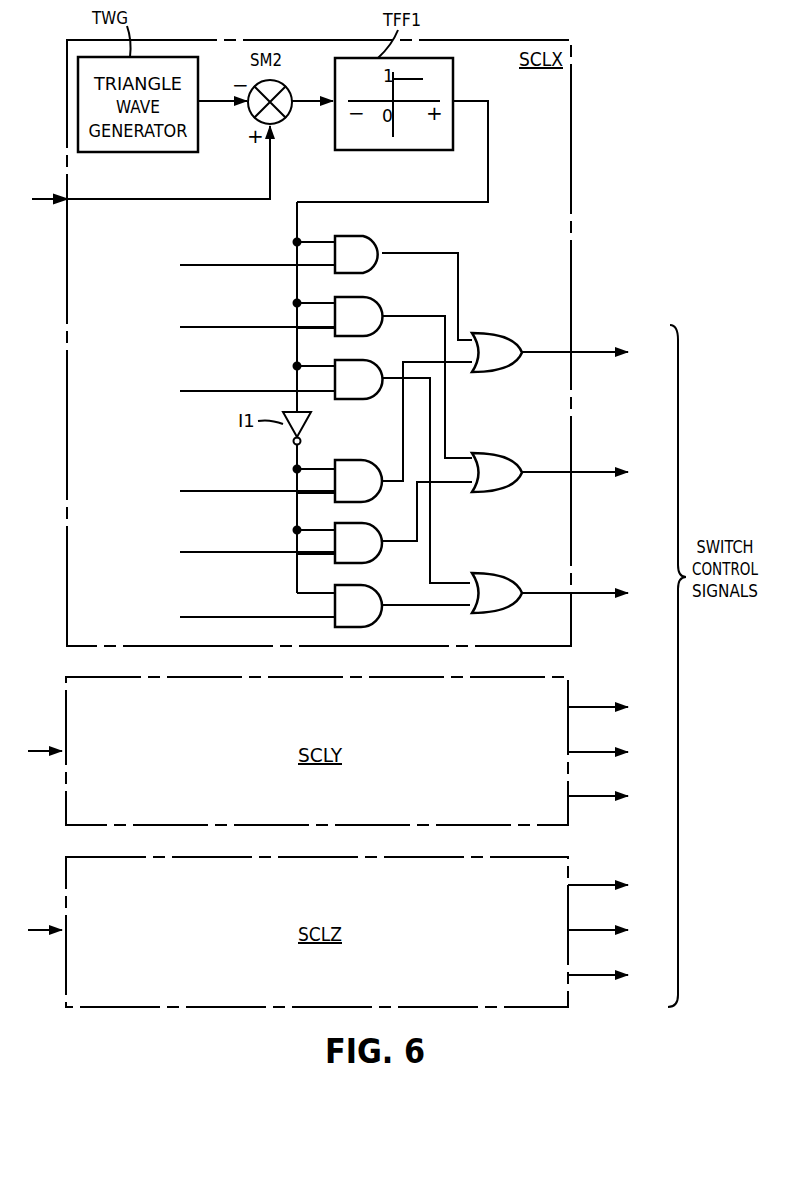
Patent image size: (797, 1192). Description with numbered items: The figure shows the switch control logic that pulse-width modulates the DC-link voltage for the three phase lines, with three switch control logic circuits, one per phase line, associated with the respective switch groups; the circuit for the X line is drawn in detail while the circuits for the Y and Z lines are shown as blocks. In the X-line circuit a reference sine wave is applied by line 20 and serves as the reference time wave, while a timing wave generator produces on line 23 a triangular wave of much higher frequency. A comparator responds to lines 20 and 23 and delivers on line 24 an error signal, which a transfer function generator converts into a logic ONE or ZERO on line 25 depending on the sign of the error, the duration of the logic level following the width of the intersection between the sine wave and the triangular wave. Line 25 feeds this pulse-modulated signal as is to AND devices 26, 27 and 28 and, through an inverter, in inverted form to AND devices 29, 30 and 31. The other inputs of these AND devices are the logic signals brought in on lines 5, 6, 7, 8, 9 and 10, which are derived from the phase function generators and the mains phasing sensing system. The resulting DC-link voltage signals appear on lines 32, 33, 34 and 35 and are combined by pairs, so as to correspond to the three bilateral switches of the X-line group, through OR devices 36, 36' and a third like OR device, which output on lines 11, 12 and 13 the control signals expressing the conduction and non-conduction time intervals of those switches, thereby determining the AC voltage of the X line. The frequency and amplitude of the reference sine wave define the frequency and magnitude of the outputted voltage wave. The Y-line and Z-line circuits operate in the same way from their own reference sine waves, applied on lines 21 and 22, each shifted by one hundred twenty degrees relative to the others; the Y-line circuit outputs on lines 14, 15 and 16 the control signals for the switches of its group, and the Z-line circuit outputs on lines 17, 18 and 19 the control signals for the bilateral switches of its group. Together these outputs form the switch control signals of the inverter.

The comparator signal line 1+ 5 is at (236, 262).
The comparator signal line 2+ 6 is at (236, 324).
The comparator signal line 3+ 7 is at (236, 388).
The comparator signal line 1- 8 is at (236, 488).
The comparator signal line 2- 9 is at (236, 549).
The comparator signal line 3- 10 is at (240, 614).
The output line 11 is at (540, 352).
The output line 12 is at (540, 472).
The output line 13 is at (540, 593).
The output line 14 is at (596, 710).
The output line 15 is at (596, 755).
The output line 16 is at (596, 798).
The output line 17 is at (594, 883).
The output line 18 is at (596, 933).
The output line 19 is at (578, 979).
The reference sine wave line 20 is at (40, 203).
The reference voltage input v*y 21 is at (32, 754).
The reference voltage input v*z 22 is at (30, 933).
The triangular wave line 23 is at (214, 98).
The error signal line 24 is at (310, 101).
The logic signal line 25 is at (476, 101).
The AND device 26 is at (360, 236).
The AND device 27 is at (360, 297).
The AND device 28 is at (360, 360).
The AND device 29 is at (360, 460).
The AND device 30 is at (360, 523).
The AND device 31 is at (360, 585).
The DC-link voltage line 32 is at (422, 253).
The DC-link voltage line 33 is at (410, 317).
The DC-link voltage line 34 is at (430, 522).
The DC-link voltage line 35 is at (412, 607).
The OR device 36 is at (497, 342).
The OR device 36' is at (497, 460).